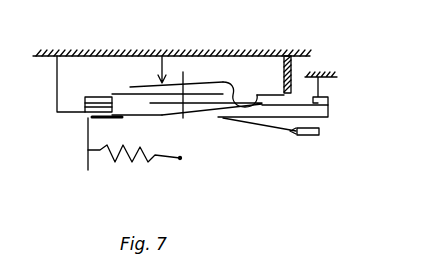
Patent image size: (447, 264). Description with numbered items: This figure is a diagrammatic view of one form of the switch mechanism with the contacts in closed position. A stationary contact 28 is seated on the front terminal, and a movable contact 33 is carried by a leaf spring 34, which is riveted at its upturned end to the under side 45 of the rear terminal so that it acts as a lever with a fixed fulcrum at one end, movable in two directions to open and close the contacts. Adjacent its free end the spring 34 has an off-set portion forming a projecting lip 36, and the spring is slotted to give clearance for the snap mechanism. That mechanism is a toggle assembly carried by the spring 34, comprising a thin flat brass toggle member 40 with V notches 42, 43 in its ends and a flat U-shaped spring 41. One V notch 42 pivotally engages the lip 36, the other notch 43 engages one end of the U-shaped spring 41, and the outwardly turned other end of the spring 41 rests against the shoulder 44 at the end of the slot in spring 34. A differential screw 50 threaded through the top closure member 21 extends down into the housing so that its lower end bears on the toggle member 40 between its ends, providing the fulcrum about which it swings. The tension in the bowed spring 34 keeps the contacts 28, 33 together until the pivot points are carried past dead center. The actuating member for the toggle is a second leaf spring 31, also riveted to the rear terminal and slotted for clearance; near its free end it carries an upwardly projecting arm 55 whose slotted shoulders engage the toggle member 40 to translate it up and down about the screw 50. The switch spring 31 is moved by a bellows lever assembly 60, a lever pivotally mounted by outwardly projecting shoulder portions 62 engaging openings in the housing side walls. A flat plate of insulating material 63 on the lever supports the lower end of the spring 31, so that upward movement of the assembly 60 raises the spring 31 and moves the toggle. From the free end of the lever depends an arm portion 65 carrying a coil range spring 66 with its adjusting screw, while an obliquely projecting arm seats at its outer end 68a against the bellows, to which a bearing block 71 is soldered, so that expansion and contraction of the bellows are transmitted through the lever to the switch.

The top closure member 21 is at (263, 54).
The stationary contact 28 is at (83, 110).
The contact 33 is at (86, 85).
The V notch 42 is at (132, 88).
The projecting lip 36 is at (130, 86).
The toggle member 40 is at (207, 73).
The differential screw 50 is at (163, 57).
The leaf spring 34 is at (152, 96).
The leaf spring 31 is at (183, 117).
The upwardly projecting arm 55 is at (188, 108).
The V notch 43 is at (226, 80).
The shoulder 44 is at (260, 93).
The under side 45 is at (291, 70).
The shoulder portions 62 is at (328, 97).
The bellows lever assembly 60 is at (328, 118).
The U-shaped spring 41 is at (262, 100).
The outer end 68a is at (296, 135).
The bearing block 71 is at (320, 133).
The flat plate of insulating material 63 is at (100, 119).
The depending arm portion 65 is at (88, 150).
The coil range spring 66 is at (143, 158).